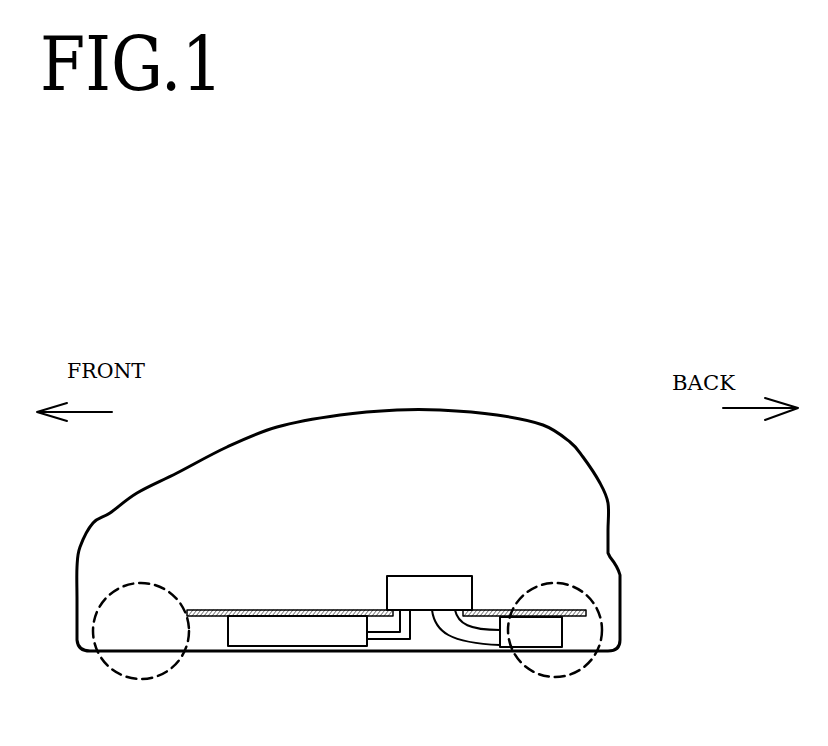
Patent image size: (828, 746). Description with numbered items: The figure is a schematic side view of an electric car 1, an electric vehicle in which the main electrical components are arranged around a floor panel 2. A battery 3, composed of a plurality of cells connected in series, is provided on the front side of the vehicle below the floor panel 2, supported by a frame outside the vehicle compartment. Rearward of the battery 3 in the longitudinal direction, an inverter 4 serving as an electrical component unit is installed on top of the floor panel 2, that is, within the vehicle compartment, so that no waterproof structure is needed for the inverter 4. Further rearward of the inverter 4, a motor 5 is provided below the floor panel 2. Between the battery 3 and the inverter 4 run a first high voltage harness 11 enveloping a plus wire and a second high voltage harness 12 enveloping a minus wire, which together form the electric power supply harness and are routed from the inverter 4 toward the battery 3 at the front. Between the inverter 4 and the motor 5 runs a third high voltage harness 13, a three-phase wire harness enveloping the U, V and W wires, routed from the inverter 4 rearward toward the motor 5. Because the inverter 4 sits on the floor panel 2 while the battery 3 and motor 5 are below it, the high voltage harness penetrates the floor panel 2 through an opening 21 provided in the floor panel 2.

The electric car 1 is at (602, 345).
The floor panel 2 is at (577, 610).
The battery 3 is at (282, 635).
The inverter 4 is at (440, 587).
The motor 5 is at (527, 635).
The first high voltage harness 11 is at (365, 630).
The second high voltage harness 12 is at (387, 640).
The third high voltage harness 13 is at (475, 633).
The opening 21 is at (402, 617).